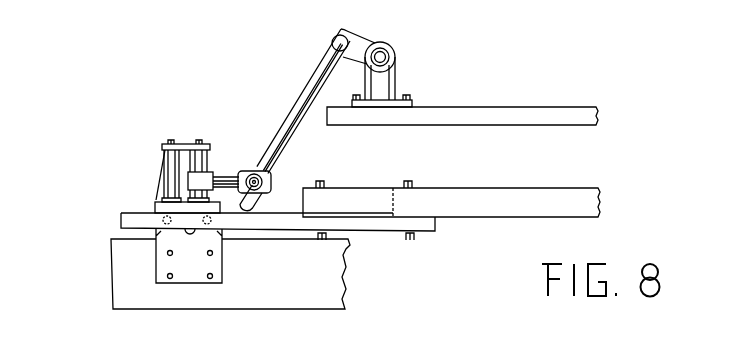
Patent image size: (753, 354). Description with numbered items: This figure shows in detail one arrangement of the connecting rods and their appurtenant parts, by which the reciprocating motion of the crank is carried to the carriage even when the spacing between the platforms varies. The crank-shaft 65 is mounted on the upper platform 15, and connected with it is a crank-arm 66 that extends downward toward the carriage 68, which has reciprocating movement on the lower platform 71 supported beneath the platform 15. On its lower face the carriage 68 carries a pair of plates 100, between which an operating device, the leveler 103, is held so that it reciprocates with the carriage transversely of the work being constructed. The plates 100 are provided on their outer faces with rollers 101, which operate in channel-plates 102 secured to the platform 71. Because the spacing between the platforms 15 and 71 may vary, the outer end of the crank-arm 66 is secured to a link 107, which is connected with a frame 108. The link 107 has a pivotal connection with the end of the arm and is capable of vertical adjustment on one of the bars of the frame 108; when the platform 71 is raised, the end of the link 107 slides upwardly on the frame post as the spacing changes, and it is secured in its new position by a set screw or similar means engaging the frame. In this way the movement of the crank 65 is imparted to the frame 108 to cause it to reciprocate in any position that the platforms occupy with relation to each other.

The platform 15 is at (540, 111).
The crank-shaft 65 is at (362, 43).
The crank-arm 66 is at (290, 122).
The carriage 68 is at (165, 210).
The platform 71 is at (570, 205).
The plate 100 is at (163, 262).
The roller 101 is at (167, 223).
The channel-plate 102 is at (372, 218).
The leveler 103 is at (323, 295).
The link 107 is at (227, 175).
The frame 108 is at (175, 170).